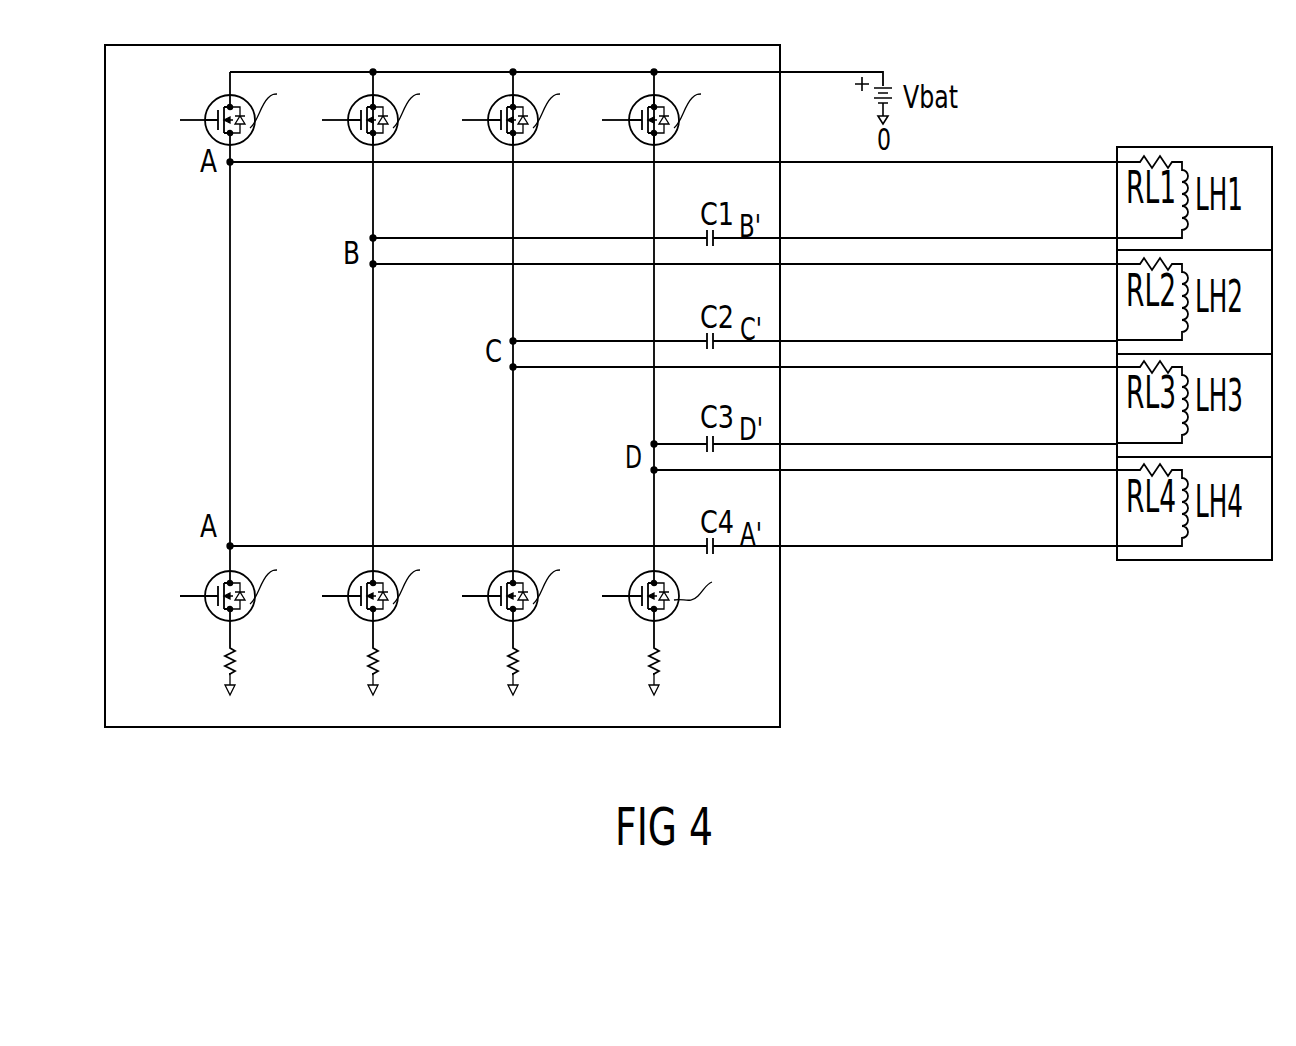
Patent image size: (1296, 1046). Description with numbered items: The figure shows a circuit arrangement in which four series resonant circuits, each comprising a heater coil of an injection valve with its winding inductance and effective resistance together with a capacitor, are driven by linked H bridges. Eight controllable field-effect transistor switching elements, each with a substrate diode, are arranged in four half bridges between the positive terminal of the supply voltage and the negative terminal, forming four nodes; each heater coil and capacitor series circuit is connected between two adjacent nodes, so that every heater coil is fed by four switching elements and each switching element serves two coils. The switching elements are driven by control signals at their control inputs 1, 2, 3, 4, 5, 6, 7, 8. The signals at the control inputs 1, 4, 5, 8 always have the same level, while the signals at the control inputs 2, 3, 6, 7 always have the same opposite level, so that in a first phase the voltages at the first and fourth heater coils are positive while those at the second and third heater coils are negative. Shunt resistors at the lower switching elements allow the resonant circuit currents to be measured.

The control input 1 is at (217, 104).
The control input 2 is at (214, 636).
The control input 3 is at (360, 104).
The control input 4 is at (357, 618).
The control input 5 is at (500, 104).
The control input 6 is at (498, 618).
The control input 7 is at (645, 104).
The control input 8 is at (646, 618).